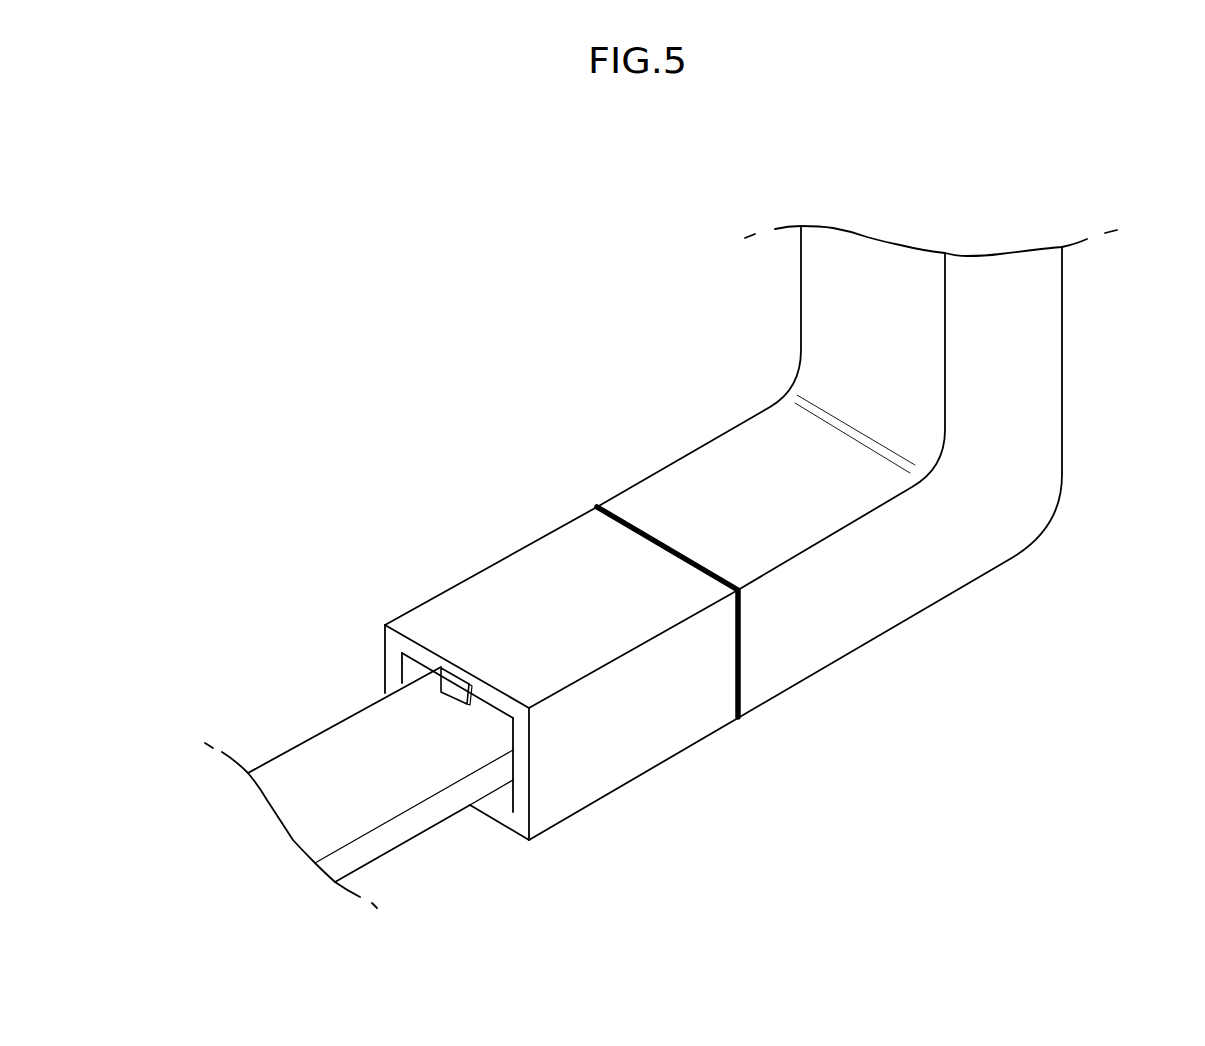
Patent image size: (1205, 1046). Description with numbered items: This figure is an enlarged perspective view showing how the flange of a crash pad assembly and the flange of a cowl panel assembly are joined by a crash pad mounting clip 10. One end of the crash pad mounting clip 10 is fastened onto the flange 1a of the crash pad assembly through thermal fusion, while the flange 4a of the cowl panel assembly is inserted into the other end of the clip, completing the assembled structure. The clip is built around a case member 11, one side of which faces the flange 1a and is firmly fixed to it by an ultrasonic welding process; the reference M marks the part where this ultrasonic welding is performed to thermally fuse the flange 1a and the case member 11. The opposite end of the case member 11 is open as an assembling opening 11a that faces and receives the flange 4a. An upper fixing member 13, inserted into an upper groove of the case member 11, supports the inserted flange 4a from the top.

The flange of the crash pad assembly 1a is at (903, 602).
The ultrasonic welding part M is at (745, 672).
The case member 11 is at (517, 577).
The assembling opening 11a is at (495, 803).
The crash pad mounting clip 10 is at (690, 760).
The upper fixing member 13 is at (441, 692).
The flange of the cowl panel assembly 4a is at (315, 757).